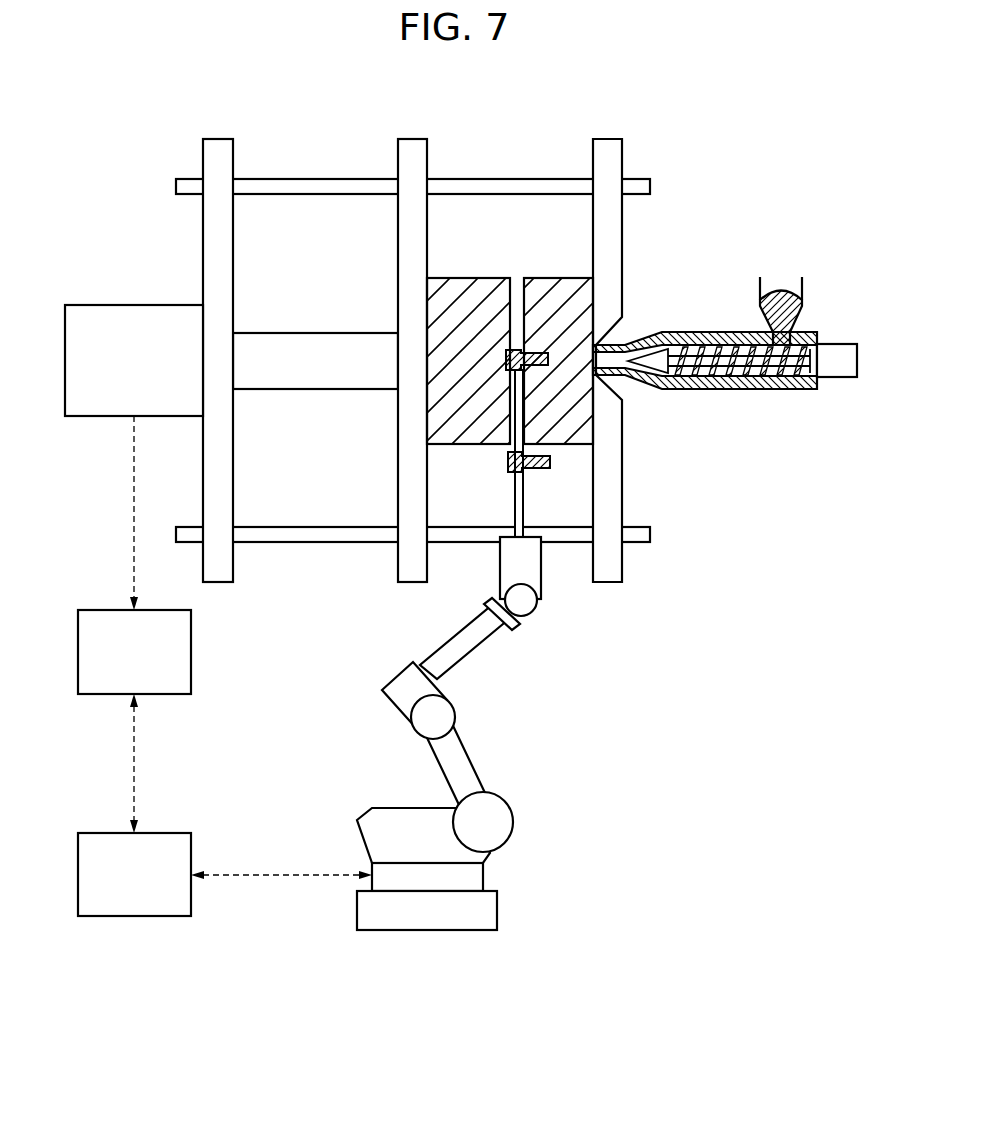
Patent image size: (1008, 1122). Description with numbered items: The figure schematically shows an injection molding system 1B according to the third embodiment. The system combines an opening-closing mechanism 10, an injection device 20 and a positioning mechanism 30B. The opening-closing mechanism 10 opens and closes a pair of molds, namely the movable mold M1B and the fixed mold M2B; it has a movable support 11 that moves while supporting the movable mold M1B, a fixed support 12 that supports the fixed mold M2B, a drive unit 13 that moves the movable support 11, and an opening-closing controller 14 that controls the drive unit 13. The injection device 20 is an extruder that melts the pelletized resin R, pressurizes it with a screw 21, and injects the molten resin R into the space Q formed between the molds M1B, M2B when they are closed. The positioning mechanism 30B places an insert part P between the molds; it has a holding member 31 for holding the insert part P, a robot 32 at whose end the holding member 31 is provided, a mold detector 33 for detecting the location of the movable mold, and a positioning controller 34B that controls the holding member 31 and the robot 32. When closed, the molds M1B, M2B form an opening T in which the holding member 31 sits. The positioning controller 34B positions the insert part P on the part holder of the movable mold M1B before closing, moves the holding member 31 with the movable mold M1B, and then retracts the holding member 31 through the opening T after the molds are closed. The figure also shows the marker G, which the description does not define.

The injection molding system 1B is at (800, 157).
The opening-closing mechanism 10 is at (492, 165).
The movable support 11 is at (427, 167).
The fixed support 12 is at (593, 167).
The drive unit 13 is at (133, 305).
The opening-closing controller 14 is at (91, 610).
The injection device 20 is at (700, 306).
The screw 21 is at (738, 385).
The resin R is at (781, 283).
The movable mold M1B is at (450, 278).
The fixed mold M2B is at (563, 278).
The insert part P is at (506, 352).
The space Q is at (543, 358).
The opening T is at (527, 403).
The taken-out molded product G is at (508, 462).
The positioning mechanism 30B is at (414, 733).
The holding member 31 is at (524, 492).
The robot 32 is at (473, 765).
The mold detector 33 is at (532, 370).
The positioning controller 34B is at (91, 833).